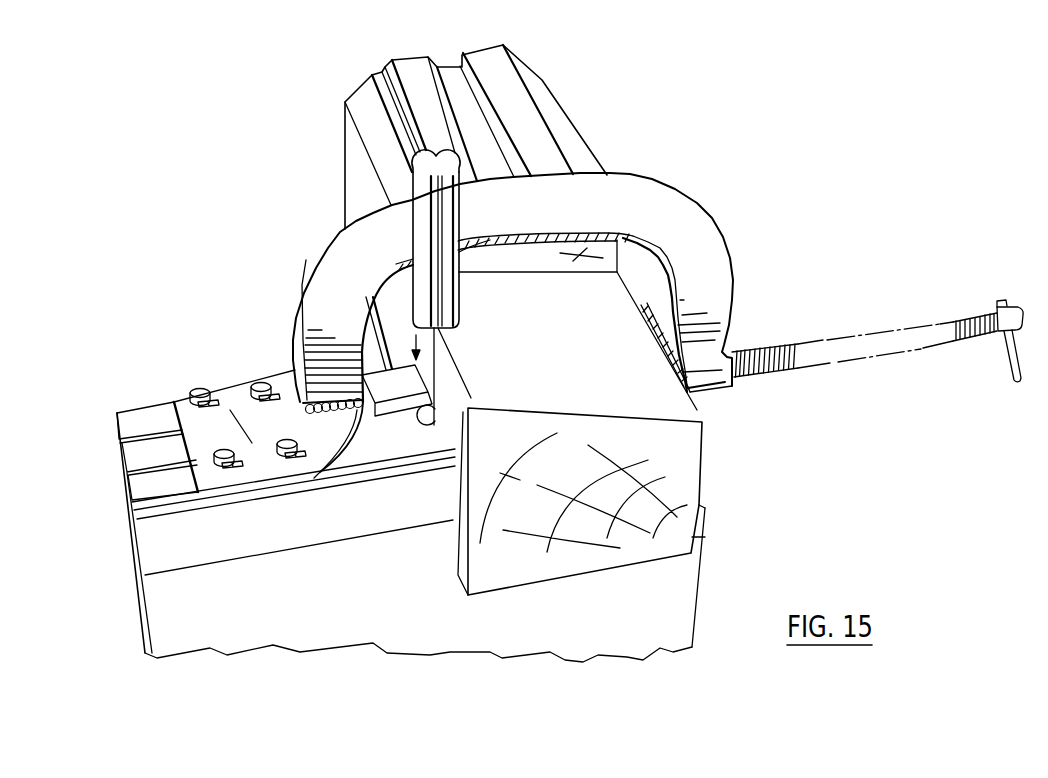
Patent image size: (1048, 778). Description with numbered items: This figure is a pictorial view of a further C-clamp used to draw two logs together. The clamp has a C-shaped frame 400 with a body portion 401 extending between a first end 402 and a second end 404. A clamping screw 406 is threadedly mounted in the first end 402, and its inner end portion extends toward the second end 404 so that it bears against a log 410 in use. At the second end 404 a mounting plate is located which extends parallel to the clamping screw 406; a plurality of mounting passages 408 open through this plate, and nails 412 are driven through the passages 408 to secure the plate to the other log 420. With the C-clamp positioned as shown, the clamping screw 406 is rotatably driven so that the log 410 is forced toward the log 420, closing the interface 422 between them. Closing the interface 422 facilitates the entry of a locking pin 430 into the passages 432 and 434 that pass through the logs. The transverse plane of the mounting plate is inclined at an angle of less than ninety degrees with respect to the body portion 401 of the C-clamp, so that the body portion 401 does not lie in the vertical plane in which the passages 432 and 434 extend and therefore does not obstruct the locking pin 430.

The C-shaped frame 400 is at (668, 193).
The body portion 401 is at (347, 258).
The first end 402 is at (717, 305).
The second end 404 is at (329, 312).
The clamping screw 406 is at (848, 337).
The mounting passages 408 is at (239, 466).
The log 410 is at (688, 482).
The nails 412 is at (202, 391).
The log 420 is at (270, 628).
The interface 422 is at (455, 490).
The locking pin 430 is at (449, 230).
The passage 432 is at (427, 418).
The passage 434 is at (436, 366).